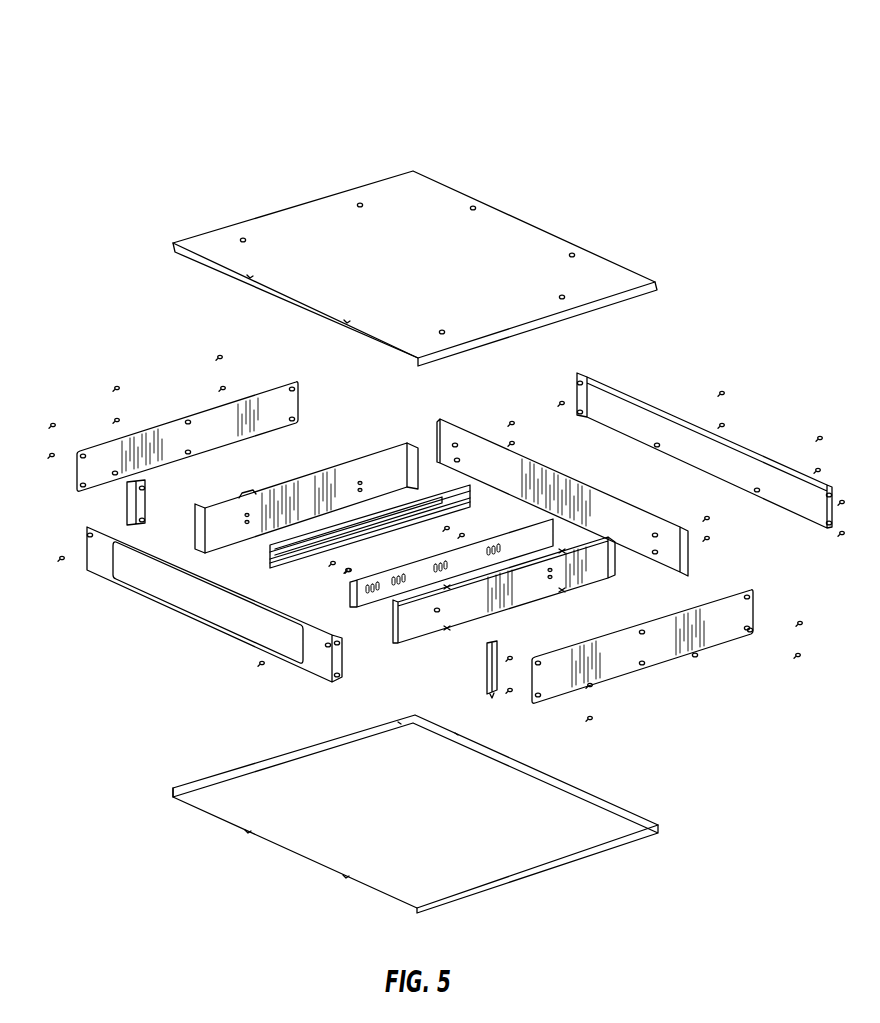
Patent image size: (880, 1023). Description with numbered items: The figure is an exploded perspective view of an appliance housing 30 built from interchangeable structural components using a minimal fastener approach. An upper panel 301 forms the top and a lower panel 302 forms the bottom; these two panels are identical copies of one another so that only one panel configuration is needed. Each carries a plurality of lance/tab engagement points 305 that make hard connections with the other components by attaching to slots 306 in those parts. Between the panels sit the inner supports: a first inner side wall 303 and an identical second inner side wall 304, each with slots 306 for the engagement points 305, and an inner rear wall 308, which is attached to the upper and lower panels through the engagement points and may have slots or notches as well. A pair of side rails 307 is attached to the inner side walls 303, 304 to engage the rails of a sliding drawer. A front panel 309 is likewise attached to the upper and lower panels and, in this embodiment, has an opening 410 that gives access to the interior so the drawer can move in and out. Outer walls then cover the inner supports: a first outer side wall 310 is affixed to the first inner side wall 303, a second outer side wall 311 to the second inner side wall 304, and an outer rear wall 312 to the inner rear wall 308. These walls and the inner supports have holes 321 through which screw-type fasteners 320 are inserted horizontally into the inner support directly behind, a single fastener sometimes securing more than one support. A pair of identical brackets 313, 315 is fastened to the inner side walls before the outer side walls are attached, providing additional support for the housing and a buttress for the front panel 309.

The appliance housing 30 is at (611, 74).
The upper panel 301 is at (409, 280).
The lower panel 302 is at (401, 809).
The first inner side wall 303 is at (405, 465).
The second inner side wall 304 is at (583, 572).
The engagement points 305 is at (572, 252).
The slots 306 is at (247, 497).
The side rails 307 is at (352, 584).
The inner rear wall 308 is at (598, 498).
The front panel 309 is at (98, 565).
The first outer side wall 310 is at (212, 415).
The second outer side wall 311 is at (723, 633).
The outer rear wall 312 is at (727, 453).
The bracket 313 is at (127, 503).
The bracket 315 is at (489, 697).
The fasteners 320 is at (50, 453).
The holes 321 is at (457, 444).
The opening 410 is at (233, 635).